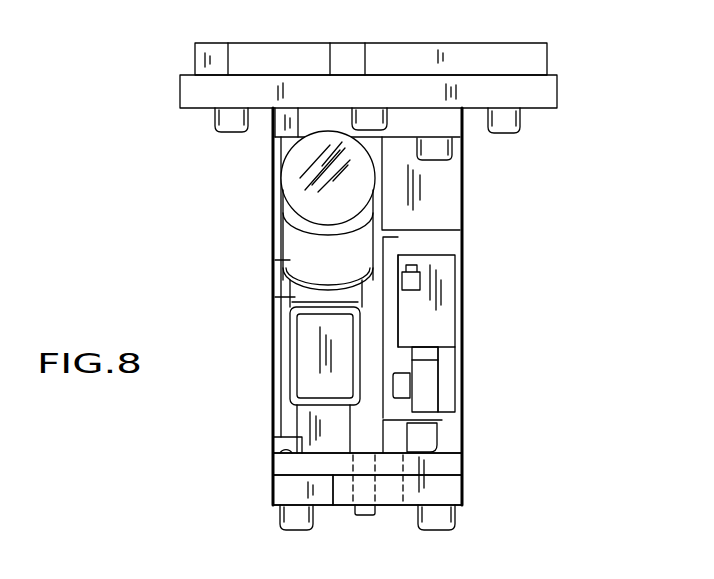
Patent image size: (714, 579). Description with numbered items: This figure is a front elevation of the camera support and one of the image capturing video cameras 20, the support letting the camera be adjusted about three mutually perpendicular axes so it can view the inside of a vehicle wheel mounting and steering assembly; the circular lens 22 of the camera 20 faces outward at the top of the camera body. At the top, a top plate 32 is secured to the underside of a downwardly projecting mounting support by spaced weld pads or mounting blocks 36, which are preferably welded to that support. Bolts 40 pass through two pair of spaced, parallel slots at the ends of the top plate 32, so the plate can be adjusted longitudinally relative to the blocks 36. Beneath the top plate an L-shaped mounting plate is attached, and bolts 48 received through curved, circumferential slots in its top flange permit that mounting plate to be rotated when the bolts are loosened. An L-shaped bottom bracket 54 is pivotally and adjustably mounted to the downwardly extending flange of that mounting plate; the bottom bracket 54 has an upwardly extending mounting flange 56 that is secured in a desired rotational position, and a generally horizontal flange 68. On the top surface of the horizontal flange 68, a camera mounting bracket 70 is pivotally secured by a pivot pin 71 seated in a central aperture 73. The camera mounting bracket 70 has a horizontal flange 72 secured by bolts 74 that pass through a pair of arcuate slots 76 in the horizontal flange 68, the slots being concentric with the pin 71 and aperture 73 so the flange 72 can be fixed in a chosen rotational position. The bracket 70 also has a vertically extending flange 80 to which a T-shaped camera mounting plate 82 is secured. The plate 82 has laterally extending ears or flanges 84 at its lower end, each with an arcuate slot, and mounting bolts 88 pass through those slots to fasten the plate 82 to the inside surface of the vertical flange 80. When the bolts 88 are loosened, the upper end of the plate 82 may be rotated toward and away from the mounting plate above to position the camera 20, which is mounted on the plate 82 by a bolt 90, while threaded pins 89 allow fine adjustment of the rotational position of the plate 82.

The image capturing video camera 20 is at (298, 292).
The lens 22 is at (315, 212).
The top plate 32 is at (543, 92).
The mounting blocks 36 is at (513, 50).
The bolts 40 is at (221, 135).
The bolts 48 is at (440, 153).
The bottom bracket 54 is at (258, 403).
The mounting flange 56 is at (280, 362).
The horizontal flange 68 is at (460, 498).
The camera mounting bracket 70 is at (463, 406).
The pivot pin 71 is at (363, 513).
The horizontal flange 72 is at (285, 463).
The central aperture 73 is at (340, 515).
The bolts 74 is at (290, 520).
The arcuate slots 76 is at (287, 498).
The vertically extending flange 80 is at (453, 378).
The camera mounting plate 82 is at (390, 320).
The flanges 84 is at (425, 378).
The mounting bolts 88 is at (400, 375).
The threaded pins 89 is at (415, 435).
The bolt 90 is at (420, 280).